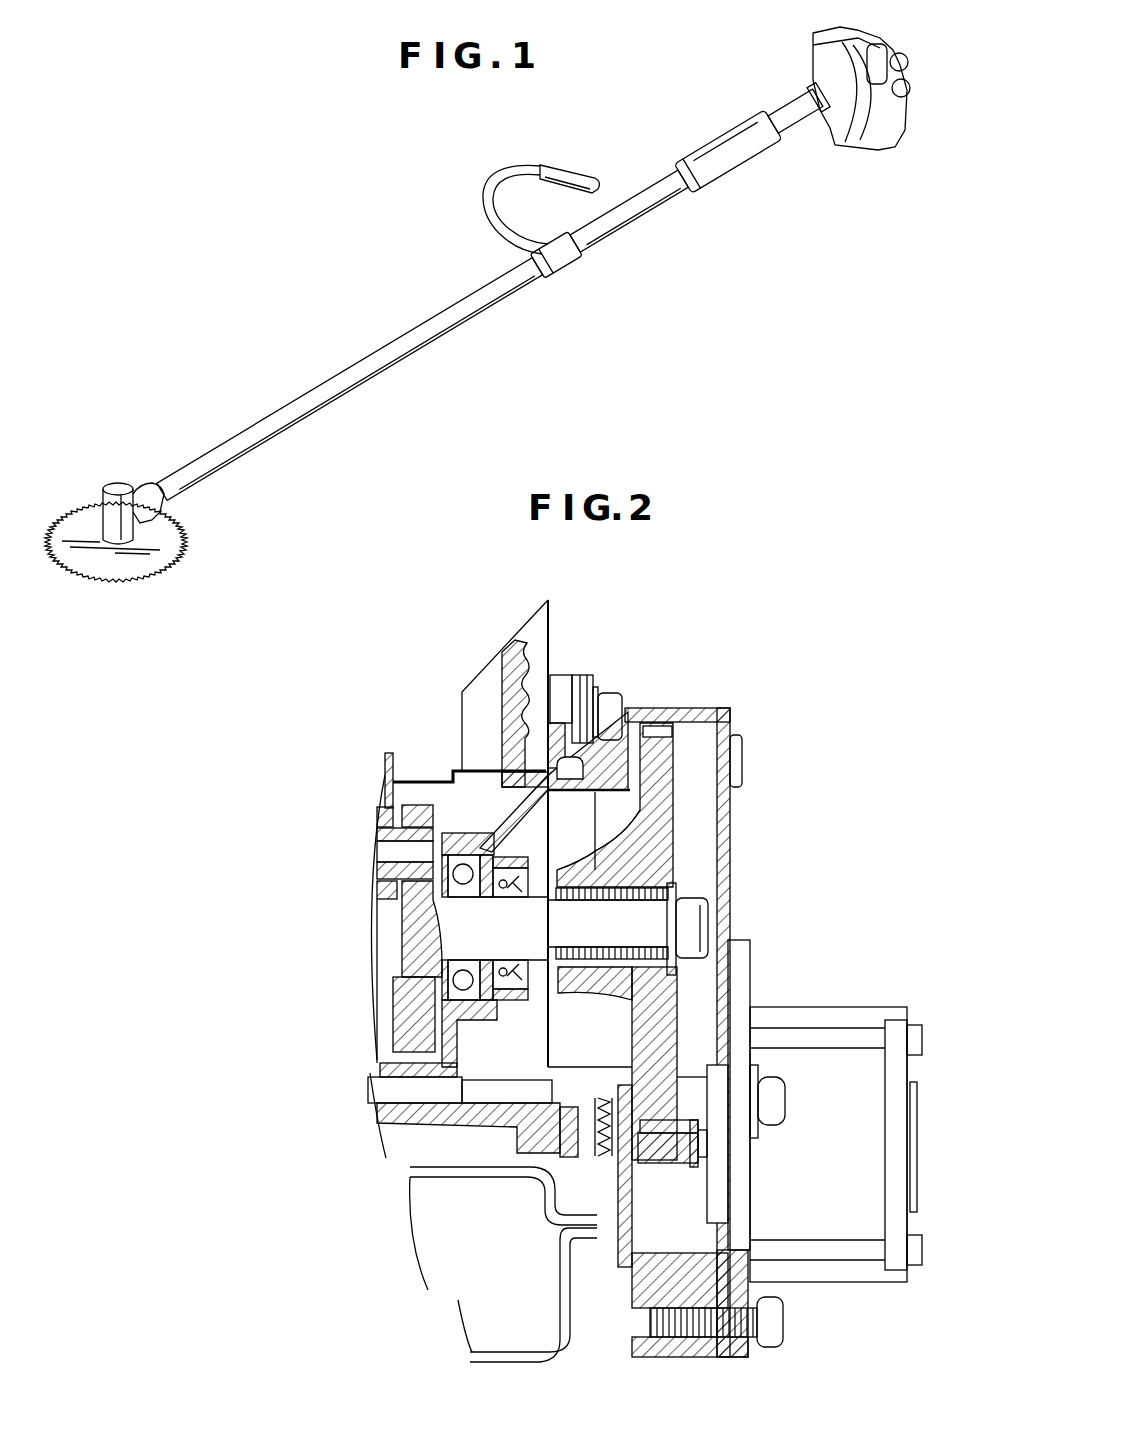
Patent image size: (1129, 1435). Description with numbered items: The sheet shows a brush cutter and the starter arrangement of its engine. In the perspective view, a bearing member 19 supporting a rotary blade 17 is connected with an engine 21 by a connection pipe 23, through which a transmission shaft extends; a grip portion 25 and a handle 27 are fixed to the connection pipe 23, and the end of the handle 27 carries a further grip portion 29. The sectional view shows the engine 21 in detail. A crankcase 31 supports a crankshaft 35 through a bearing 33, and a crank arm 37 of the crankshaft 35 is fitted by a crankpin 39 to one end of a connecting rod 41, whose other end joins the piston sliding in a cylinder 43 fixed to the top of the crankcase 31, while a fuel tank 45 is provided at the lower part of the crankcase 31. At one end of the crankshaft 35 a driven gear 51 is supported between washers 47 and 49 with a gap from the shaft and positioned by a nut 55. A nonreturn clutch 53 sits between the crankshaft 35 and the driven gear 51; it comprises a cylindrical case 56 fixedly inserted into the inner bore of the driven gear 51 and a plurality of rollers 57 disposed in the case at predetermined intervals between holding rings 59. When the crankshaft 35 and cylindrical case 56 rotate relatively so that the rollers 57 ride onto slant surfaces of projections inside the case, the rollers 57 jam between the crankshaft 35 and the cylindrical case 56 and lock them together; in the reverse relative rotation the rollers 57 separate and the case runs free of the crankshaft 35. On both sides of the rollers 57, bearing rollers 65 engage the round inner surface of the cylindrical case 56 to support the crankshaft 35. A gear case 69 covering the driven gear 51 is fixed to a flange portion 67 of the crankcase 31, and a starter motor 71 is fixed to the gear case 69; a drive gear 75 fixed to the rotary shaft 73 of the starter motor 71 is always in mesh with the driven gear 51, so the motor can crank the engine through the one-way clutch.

In FIG. 1, the rotary blade 17 is at (163, 548).
In FIG. 1, the bearing member 19 is at (119, 483).
In FIG. 1, the engine 21 is at (812, 88).
In FIG. 2, the engine 21 is at (600, 597).
In FIG. 1, the connection pipe 23 is at (379, 374).
In FIG. 1, the grip portion 25 is at (722, 160).
In FIG. 1, the handle 27 is at (518, 190).
In FIG. 1, the grip portion 29 is at (571, 182).
In FIG. 2, the crankcase 31 is at (383, 1140).
In FIG. 2, the bearing 33 is at (445, 975).
In FIG. 2, the crankshaft 35 is at (476, 856).
In FIG. 2, the crank arm 37 is at (405, 808).
In FIG. 2, the crankpin 39 is at (390, 856).
In FIG. 2, the connecting rod 41 is at (380, 798).
In FIG. 2, the cylinder 43 is at (485, 700).
In FIG. 2, the fuel tank 45 is at (598, 1335).
In FIG. 2, the washer 47 is at (490, 905).
In FIG. 2, the washer 49 is at (650, 905).
In FIG. 2, the driven gear 51 is at (665, 845).
In FIG. 2, the nonreturn clutch 53 is at (607, 985).
In FIG. 2, the nut 55 is at (696, 928).
In FIG. 2, the cylindrical case 56 is at (650, 888).
In FIG. 2, the rollers 57 is at (612, 900).
In FIG. 2, the holding rings 59 is at (578, 747).
In FIG. 2, the bearing rollers 65 is at (552, 985).
In FIG. 2, the flange portion 67 is at (634, 1216).
In FIG. 2, the gear case 69 is at (740, 975).
In FIG. 2, the starter motor 71 is at (845, 1083).
In FIG. 2, the rotary shaft 73 is at (702, 1150).
In FIG. 2, the drive gear 75 is at (742, 1042).